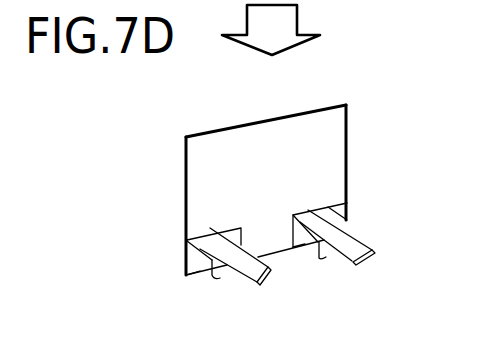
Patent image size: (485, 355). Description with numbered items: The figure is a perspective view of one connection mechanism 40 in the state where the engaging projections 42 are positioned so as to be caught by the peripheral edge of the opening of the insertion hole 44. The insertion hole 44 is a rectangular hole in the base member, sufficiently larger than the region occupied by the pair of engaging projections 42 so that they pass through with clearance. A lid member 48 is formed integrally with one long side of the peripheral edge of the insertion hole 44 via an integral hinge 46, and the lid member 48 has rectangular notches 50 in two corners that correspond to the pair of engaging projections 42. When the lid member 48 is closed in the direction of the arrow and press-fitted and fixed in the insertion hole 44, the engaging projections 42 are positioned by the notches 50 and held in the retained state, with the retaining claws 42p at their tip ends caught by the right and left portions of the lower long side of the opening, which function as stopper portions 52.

The connection mechanism 40 is at (146, 139).
The engaging projection 42 is at (260, 280).
The retaining claw 42p is at (220, 280).
The insertion hole 44 is at (187, 185).
The integral hinge 46 is at (247, 124).
The lid member 48 is at (320, 158).
The notch 50 is at (208, 255).
The stopper portion 52 is at (197, 277).